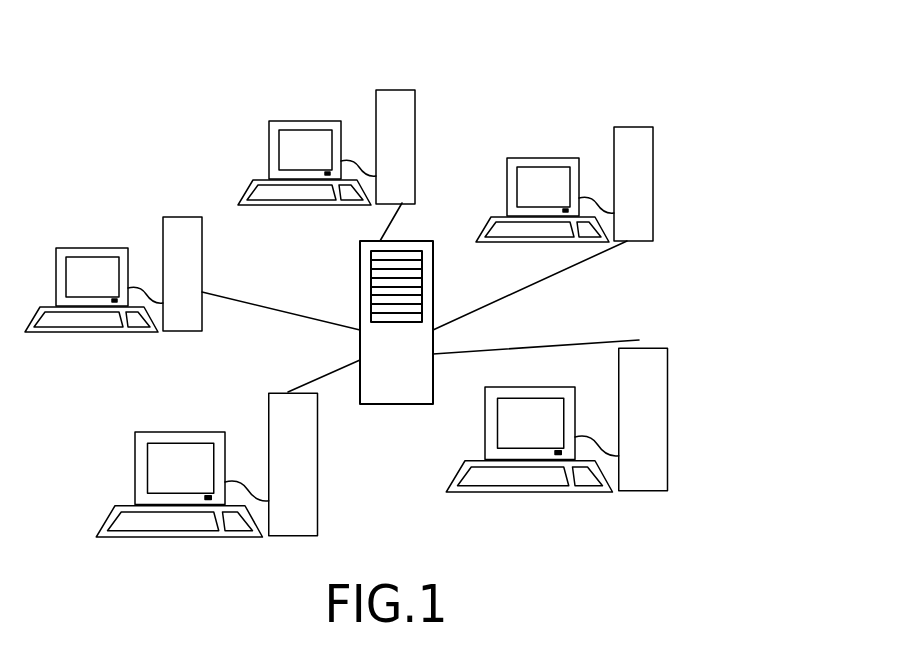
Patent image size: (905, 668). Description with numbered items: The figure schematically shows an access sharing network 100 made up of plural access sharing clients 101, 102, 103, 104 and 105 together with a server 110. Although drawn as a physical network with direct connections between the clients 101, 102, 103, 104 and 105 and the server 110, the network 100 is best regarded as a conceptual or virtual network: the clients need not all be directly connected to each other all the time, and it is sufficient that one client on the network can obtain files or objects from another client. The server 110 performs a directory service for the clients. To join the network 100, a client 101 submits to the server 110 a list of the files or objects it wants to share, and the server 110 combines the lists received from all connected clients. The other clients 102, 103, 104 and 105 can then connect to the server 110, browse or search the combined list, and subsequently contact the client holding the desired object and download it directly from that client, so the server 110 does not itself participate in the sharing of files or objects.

The access sharing network 100 is at (420, 201).
The access sharing client 101 is at (177, 217).
The access sharing client 102 is at (414, 113).
The access sharing client 103 is at (653, 141).
The access sharing client 104 is at (664, 416).
The access sharing client 105 is at (314, 453).
The server 110 is at (362, 315).